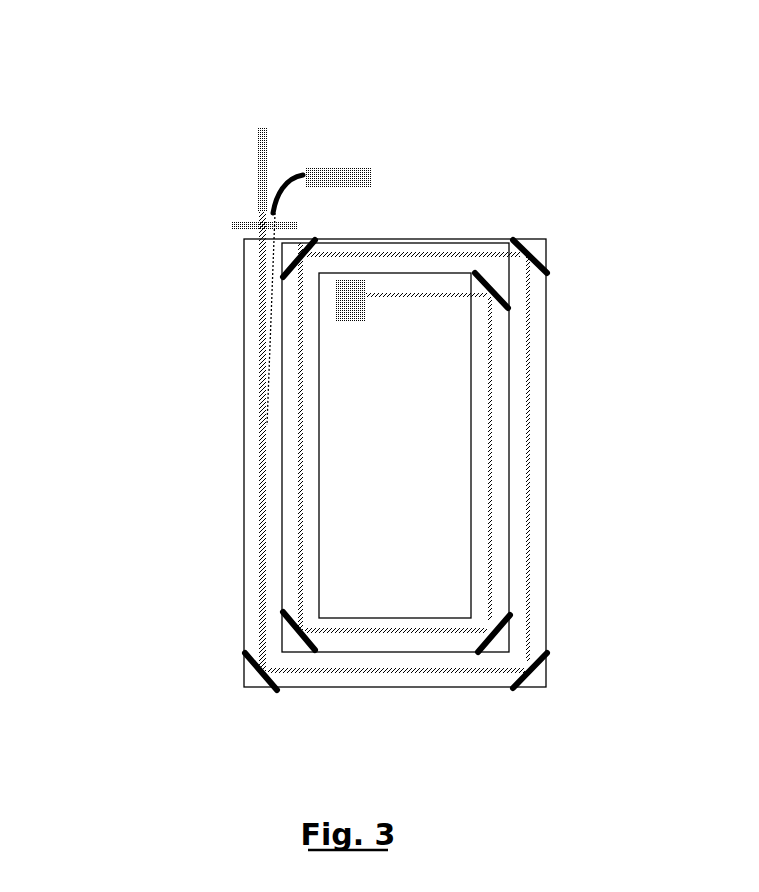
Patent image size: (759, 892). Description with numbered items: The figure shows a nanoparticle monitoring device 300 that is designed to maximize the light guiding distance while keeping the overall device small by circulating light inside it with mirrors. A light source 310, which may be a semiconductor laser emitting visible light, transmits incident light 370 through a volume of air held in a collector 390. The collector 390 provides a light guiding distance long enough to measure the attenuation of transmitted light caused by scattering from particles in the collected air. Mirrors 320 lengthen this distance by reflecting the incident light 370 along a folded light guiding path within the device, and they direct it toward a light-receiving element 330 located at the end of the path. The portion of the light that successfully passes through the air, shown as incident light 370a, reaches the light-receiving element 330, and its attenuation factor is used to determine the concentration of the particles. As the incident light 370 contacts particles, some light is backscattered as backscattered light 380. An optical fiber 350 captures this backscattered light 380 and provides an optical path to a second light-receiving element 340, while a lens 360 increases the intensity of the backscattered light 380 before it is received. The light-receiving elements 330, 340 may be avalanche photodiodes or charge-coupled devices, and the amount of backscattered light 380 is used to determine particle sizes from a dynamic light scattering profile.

The nanoparticle monitoring device 300 is at (596, 154).
The light source 310 is at (255, 166).
The mirrors 320 is at (250, 676).
The light-receiving element 330 is at (352, 275).
The light-receiving element 340 is at (341, 163).
The optical fiber 350 is at (283, 175).
The lens 360 is at (225, 222).
The incident light 370 is at (260, 565).
The incident light portion 370a is at (392, 293).
The backscattered light 380 is at (267, 334).
The collector 390 is at (243, 423).